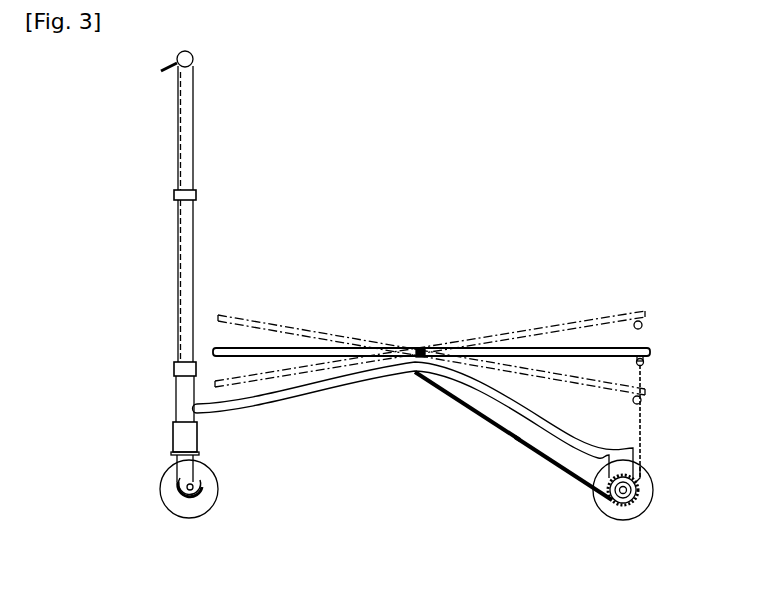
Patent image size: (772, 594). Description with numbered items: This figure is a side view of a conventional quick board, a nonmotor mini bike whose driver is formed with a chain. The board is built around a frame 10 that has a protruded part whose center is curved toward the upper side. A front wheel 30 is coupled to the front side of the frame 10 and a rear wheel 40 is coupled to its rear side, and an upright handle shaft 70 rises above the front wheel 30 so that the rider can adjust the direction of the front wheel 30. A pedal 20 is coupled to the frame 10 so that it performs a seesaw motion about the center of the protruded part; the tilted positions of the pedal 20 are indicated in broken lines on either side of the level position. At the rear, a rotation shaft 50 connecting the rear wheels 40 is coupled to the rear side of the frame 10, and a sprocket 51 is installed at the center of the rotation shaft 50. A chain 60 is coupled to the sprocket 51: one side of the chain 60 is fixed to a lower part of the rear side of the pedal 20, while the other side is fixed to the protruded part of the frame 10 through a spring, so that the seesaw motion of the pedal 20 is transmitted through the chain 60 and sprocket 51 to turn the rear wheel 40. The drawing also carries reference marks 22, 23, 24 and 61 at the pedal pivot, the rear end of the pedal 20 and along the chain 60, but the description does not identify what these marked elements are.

The frame 10 is at (320, 392).
The pedal 20 is at (541, 352).
The pivot 22 is at (417, 350).
The bracket 23 is at (646, 360).
The connecting rod 24 is at (646, 366).
The front wheel 30 is at (176, 505).
The rear wheel 40 is at (642, 505).
The rotation shaft 50 is at (613, 503).
The sprocket 51 is at (642, 468).
The chain 60 is at (545, 458).
The strut upper portion 61 is at (460, 402).
The handle shaft 70 is at (183, 272).